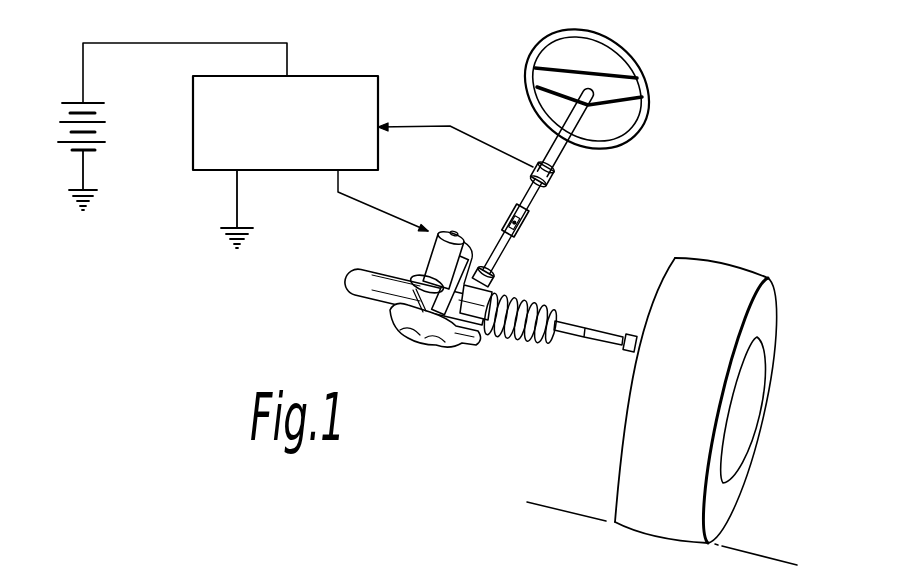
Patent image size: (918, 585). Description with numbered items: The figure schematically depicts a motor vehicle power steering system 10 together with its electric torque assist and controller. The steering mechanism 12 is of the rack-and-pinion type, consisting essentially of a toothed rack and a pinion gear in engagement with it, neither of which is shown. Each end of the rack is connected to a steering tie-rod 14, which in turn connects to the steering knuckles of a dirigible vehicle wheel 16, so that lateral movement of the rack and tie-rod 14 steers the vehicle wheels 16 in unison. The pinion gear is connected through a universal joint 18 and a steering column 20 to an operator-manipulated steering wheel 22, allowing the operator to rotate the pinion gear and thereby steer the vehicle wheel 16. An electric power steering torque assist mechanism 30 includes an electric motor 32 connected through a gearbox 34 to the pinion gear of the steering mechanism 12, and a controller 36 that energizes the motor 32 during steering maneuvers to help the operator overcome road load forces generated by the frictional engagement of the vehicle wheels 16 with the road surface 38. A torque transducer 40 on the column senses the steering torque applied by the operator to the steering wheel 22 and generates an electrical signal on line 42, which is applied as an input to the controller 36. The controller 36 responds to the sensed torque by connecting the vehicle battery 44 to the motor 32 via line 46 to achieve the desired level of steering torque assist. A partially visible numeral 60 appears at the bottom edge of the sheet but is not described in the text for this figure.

The motor vehicle power steering system 10 is at (697, 192).
The steering mechanism 12 is at (483, 343).
The steering tie-rod 14 is at (623, 333).
The dirigible vehicle wheel 16 is at (725, 262).
The universal joint 18 is at (518, 237).
The steering column 20 is at (558, 148).
The steering wheel 22 is at (652, 102).
The electric power steering torque assist mechanism 30 is at (280, 248).
The electric motor 32 is at (438, 267).
The gearbox 34 is at (405, 328).
The controller 36 is at (313, 76).
The road surface 38 is at (578, 473).
The torque transducer 40 is at (545, 182).
The line 42 is at (450, 128).
The vehicle battery 44 is at (92, 101).
The line 46 is at (162, 43).
The component (partially shown) 60 is at (261, 580).